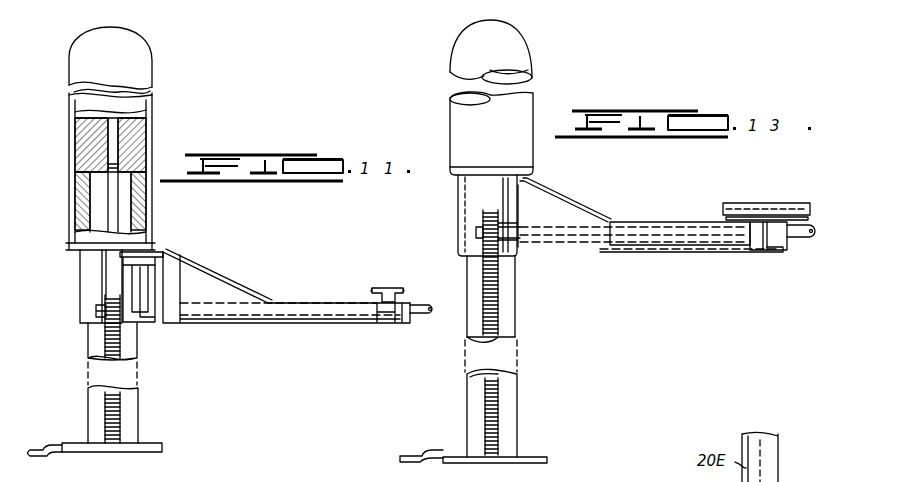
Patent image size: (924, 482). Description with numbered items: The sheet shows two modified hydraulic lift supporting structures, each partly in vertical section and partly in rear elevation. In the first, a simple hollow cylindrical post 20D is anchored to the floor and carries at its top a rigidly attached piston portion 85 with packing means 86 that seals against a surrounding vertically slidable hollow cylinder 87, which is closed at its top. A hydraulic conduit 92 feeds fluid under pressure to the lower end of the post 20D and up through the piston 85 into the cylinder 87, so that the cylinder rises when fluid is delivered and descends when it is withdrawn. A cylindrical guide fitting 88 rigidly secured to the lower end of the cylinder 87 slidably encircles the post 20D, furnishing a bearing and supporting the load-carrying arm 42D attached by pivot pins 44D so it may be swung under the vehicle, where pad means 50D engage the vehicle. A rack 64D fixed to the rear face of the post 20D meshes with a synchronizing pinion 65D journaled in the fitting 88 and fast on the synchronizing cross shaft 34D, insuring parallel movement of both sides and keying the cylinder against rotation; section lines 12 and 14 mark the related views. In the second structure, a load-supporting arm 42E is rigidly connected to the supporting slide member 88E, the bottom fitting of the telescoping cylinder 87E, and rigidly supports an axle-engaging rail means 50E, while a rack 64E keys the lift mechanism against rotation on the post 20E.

In FIG. 11, the vertically slidable hollow cylinder 87 is at (145, 106).
In FIG. 11, the piston portion 85 is at (142, 123).
In FIG. 11, the packing means 86 is at (143, 148).
In FIG. 11, the cylindrical post 20D is at (132, 194).
In FIG. 11, the cylindrical guide fitting 88 is at (88, 266).
In FIG. 11, the pivot pins 44D is at (146, 289).
In FIG. 11, the load-carrying arm 42D is at (227, 292).
In FIG. 11, the synchronizing pinion 65D is at (114, 320).
In FIG. 11, the rack 64D is at (124, 428).
In FIG. 11, the conduit 92 is at (76, 435).
In FIG. 11, the pad means 50D is at (396, 264).
In FIG. 11, the synchronizing cross shaft 34D is at (430, 313).
In FIG. 11, the section line 12 is at (190, 312).
In FIG. 11, the section line 14 is at (540, 232).
In FIG. 13, the section line 14 is at (400, 172).
In FIG. 13, the telescoping cylinder 87E is at (522, 58).
In FIG. 13, the supporting slide member 88E is at (462, 206).
In FIG. 13, the load-supporting arm 42E is at (567, 219).
In FIG. 13, the post 20E is at (508, 392).
In FIG. 13, the rack 64E is at (495, 431).
In FIG. 13, the axle-engaging rail means 50E is at (771, 253).